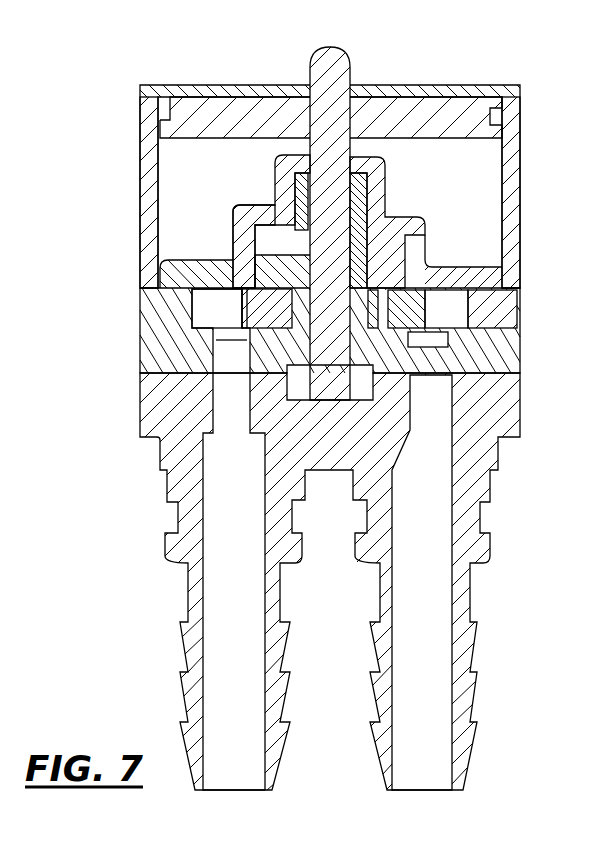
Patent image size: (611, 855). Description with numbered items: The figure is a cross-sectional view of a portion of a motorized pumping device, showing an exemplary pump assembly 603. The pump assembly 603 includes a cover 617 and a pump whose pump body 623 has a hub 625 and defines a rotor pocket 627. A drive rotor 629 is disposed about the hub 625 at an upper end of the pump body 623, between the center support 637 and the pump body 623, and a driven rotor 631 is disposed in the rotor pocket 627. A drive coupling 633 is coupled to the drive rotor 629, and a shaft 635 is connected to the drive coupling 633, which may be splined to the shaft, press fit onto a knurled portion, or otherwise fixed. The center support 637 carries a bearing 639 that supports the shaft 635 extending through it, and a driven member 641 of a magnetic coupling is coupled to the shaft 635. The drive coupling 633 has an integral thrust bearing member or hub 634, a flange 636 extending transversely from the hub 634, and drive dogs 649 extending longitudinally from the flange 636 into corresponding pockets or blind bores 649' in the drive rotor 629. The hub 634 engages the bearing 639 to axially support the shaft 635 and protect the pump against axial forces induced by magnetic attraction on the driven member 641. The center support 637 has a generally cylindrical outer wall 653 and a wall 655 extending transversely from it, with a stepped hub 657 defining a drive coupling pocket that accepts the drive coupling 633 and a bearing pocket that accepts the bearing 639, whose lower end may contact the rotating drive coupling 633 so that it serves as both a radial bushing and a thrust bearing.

The pump assembly 603 is at (62, 88).
The center support 637 is at (130, 104).
The driven member 641 is at (470, 88).
The outer wall 653 is at (150, 172).
The shaft 635 is at (300, 147).
The bearing 639 is at (300, 203).
The drive coupling 633 is at (278, 246).
The stepped hub 657 is at (160, 267).
The flange 636 is at (285, 268).
The wall 655 is at (177, 288).
The drive rotor 629 is at (265, 303).
The hub 625 is at (300, 312).
The hub 634 is at (365, 246).
The drive dogs 649 is at (503, 261).
The driven rotor 631 is at (455, 300).
The rotor pocket 627 is at (465, 326).
The pump body 623 is at (495, 348).
The blind bores 649' is at (490, 561).
The cover 617 is at (493, 413).